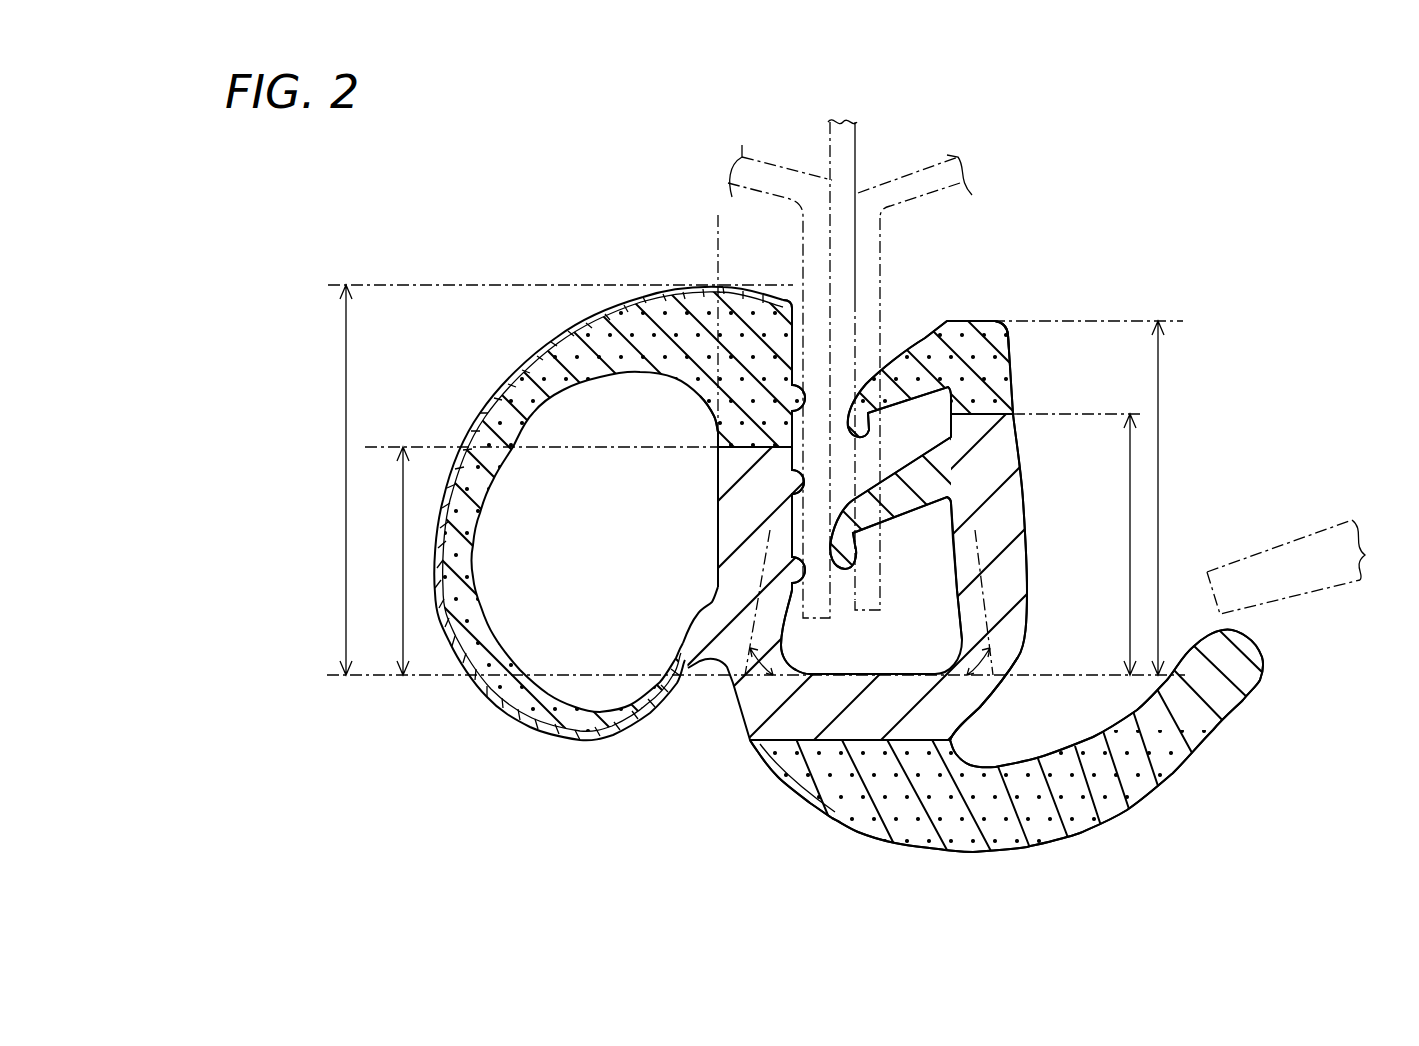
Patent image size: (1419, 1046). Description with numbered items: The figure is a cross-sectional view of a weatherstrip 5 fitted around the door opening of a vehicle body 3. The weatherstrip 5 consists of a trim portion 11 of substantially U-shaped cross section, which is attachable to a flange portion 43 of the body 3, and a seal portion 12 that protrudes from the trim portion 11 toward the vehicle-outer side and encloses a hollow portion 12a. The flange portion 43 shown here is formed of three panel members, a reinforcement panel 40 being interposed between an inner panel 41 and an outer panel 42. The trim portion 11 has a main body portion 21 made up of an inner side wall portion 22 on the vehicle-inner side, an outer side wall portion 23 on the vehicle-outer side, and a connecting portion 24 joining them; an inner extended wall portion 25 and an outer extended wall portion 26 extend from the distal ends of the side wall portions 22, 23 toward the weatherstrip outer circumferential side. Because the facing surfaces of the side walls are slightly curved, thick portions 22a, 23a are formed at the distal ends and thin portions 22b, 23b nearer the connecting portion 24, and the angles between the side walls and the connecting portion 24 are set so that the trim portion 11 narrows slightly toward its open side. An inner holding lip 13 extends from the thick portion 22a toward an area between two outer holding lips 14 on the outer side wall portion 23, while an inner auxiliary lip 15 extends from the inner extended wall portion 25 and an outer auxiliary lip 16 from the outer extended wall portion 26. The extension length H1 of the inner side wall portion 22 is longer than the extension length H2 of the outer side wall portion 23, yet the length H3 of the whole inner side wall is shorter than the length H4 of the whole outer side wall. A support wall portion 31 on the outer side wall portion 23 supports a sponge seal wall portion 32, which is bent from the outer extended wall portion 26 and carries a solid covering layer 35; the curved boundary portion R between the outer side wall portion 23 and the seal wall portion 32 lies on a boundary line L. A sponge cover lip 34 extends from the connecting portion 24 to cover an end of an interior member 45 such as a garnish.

The body 3 is at (795, 96).
The weatherstrip 5 is at (674, 802).
The trim portion 11 is at (1076, 596).
The seal portion 12 is at (470, 358).
The hollow portion 12a is at (612, 562).
The inner holding lip 13 is at (900, 513).
The outer holding lip 14 is at (802, 470).
The inner auxiliary lip 15 is at (937, 340).
The outer auxiliary lip 16 is at (803, 382).
The main body portion 21 is at (1045, 698).
The inner side wall portion 22 is at (1027, 540).
The thick portion 22a is at (1018, 450).
The thin portion 22b is at (1027, 637).
The outer side wall portion 23 is at (717, 552).
The thick portion 23a is at (717, 500).
The thin portion 23b is at (805, 655).
The connecting portion 24 is at (825, 670).
The inner extended wall portion 25 is at (1005, 325).
The outer extended wall portion 26 is at (793, 337).
The support wall portion 31 is at (687, 621).
The seal wall portion 32 is at (492, 498).
The cover lip 34 is at (1178, 780).
The covering layer 35 is at (493, 702).
The reinforcement panel 40 is at (858, 150).
The inner panel 41 is at (920, 197).
The outer panel 42 is at (760, 161).
The flange portion 43 is at (880, 262).
The interior member 45 is at (1278, 548).
The extension length of inner side wall portion H1 is at (1130, 495).
The extension length of outer side wall portion H2 is at (403, 558).
The extension length of whole inner side wall portion H3 is at (1160, 380).
The extension length of whole outer side wall portion H4 is at (346, 478).
The boundary line L is at (717, 262).
The boundary portion R is at (716, 447).